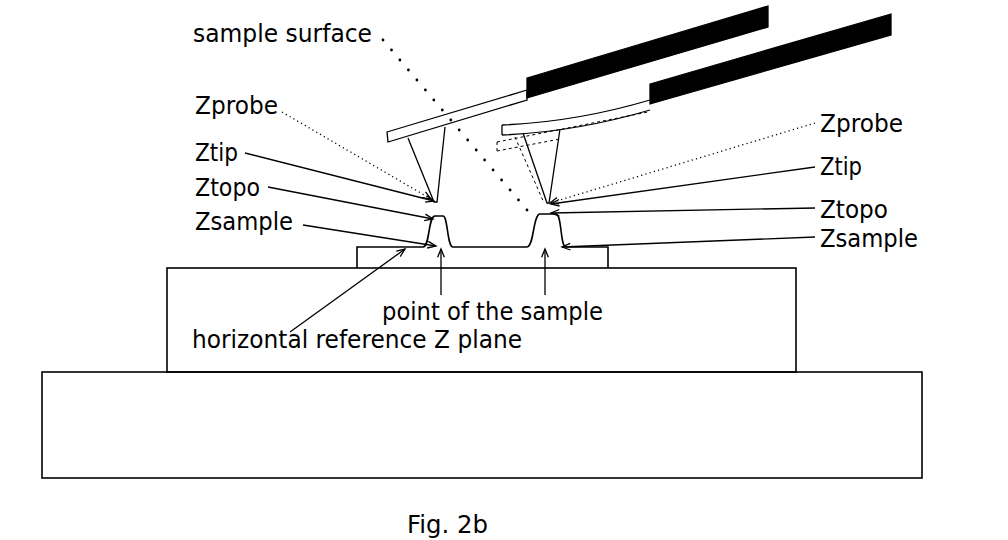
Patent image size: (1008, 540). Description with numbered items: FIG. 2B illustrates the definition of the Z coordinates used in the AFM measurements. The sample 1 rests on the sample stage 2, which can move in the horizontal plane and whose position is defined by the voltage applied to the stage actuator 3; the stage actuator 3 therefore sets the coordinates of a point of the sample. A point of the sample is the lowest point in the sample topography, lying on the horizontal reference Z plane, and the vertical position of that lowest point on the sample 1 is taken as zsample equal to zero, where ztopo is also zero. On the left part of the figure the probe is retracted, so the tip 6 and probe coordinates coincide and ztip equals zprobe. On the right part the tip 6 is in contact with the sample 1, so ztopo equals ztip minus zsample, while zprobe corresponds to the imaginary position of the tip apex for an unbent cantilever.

The sample 1 is at (357, 260).
The sample stage 2 is at (167, 295).
The stage actuator 3 is at (147, 371).
The tip 6 is at (438, 191).